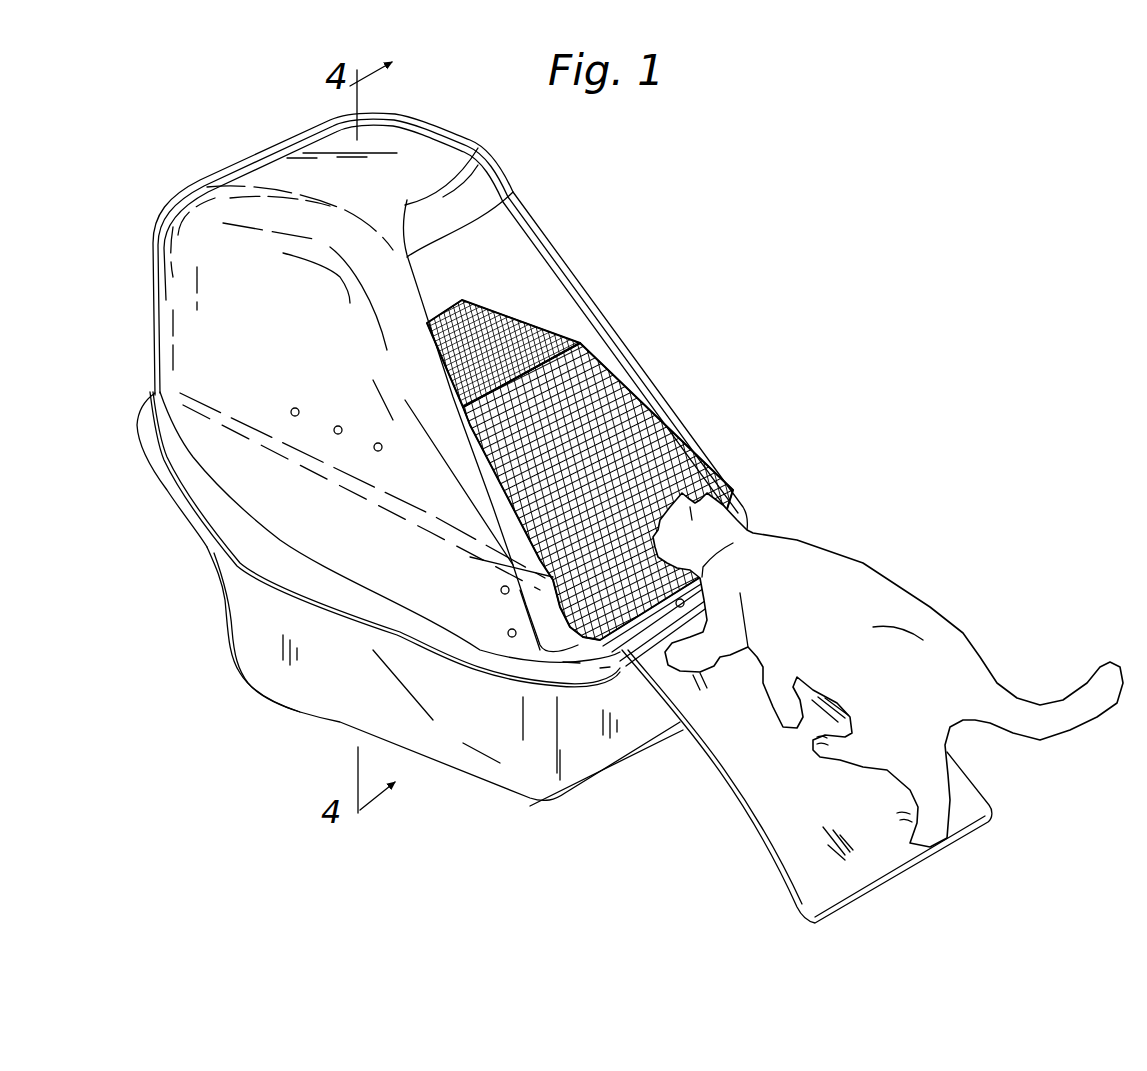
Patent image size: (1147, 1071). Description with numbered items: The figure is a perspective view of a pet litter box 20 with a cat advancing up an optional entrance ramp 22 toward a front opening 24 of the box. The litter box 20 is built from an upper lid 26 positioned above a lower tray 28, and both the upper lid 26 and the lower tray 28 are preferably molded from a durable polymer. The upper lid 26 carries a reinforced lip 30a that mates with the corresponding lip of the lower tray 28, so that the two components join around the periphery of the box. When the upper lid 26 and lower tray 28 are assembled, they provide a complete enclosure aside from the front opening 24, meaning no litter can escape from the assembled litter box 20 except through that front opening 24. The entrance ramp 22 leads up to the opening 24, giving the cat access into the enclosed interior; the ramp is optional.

The pet litter box 20 is at (672, 186).
The entrance ramp 22 is at (765, 812).
The opening 24 is at (525, 297).
The upper lid 26 is at (148, 242).
The lower tray 28 is at (222, 656).
The reinforced lip 30a is at (166, 492).